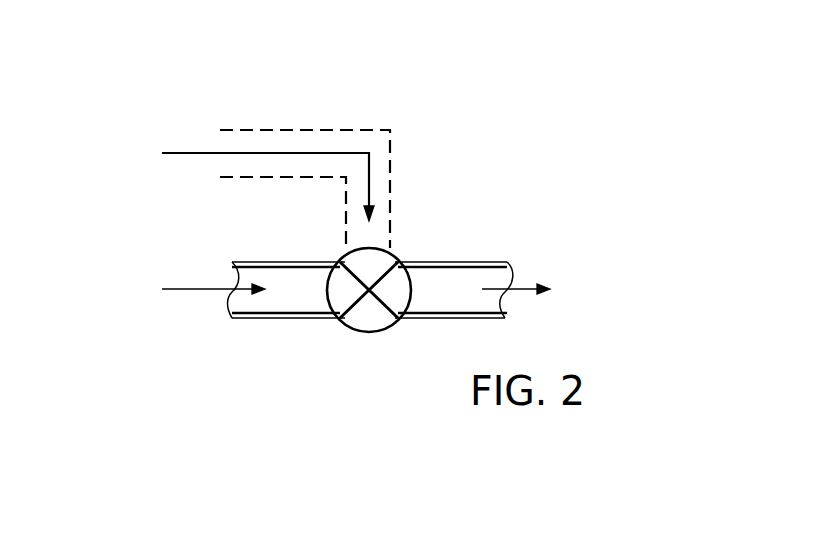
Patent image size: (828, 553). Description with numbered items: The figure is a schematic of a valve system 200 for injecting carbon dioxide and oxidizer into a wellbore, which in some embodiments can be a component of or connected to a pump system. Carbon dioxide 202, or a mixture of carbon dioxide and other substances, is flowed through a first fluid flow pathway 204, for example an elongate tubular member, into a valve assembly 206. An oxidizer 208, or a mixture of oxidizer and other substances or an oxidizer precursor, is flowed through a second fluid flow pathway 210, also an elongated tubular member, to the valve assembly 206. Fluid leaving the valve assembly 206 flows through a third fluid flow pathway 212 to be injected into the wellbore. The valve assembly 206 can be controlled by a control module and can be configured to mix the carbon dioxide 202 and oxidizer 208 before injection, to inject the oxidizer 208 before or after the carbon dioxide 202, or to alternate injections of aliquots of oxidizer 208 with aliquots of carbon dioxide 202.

The valve system 200 is at (472, 96).
The carbon dioxide 202 is at (195, 292).
The first fluid flow pathway 204 is at (287, 260).
The valve assembly 206 is at (368, 332).
The oxidizer 208 is at (195, 152).
The second fluid flow pathway 210 is at (307, 130).
The third fluid flow pathway 212 is at (452, 260).